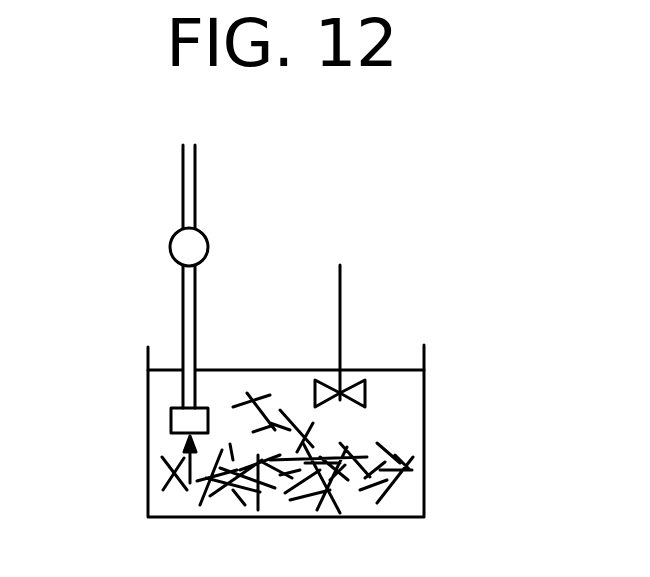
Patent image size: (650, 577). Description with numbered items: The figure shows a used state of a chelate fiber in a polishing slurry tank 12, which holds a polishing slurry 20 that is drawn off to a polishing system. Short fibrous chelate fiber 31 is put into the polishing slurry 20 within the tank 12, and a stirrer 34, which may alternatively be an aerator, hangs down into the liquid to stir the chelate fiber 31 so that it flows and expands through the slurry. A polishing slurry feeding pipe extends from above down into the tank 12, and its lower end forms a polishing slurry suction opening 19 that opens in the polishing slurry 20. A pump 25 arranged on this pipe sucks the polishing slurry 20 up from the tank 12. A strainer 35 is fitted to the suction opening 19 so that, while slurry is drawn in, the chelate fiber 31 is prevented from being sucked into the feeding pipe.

The polishing slurry tank 12 is at (424, 354).
The polishing slurry suction opening 19 is at (182, 318).
The polishing slurry 20 is at (410, 400).
The pump 25 is at (170, 253).
The chelate fiber 31 is at (400, 462).
The stirrer 34 is at (340, 292).
The strainer 35 is at (171, 424).